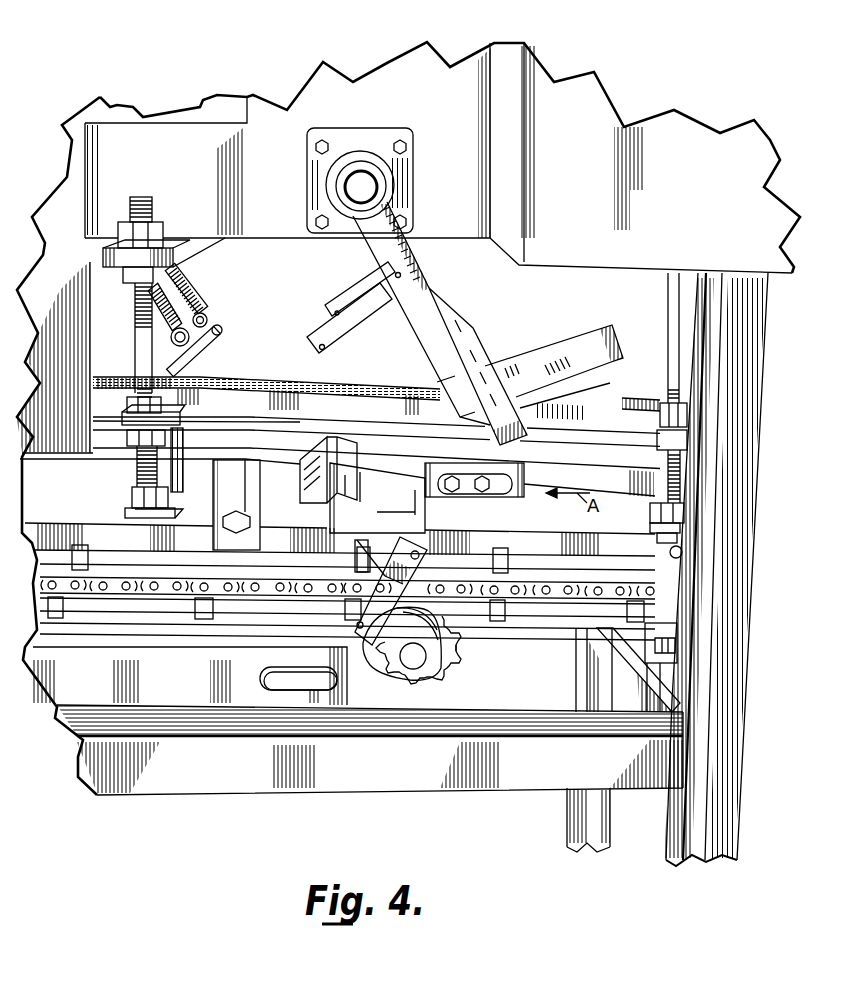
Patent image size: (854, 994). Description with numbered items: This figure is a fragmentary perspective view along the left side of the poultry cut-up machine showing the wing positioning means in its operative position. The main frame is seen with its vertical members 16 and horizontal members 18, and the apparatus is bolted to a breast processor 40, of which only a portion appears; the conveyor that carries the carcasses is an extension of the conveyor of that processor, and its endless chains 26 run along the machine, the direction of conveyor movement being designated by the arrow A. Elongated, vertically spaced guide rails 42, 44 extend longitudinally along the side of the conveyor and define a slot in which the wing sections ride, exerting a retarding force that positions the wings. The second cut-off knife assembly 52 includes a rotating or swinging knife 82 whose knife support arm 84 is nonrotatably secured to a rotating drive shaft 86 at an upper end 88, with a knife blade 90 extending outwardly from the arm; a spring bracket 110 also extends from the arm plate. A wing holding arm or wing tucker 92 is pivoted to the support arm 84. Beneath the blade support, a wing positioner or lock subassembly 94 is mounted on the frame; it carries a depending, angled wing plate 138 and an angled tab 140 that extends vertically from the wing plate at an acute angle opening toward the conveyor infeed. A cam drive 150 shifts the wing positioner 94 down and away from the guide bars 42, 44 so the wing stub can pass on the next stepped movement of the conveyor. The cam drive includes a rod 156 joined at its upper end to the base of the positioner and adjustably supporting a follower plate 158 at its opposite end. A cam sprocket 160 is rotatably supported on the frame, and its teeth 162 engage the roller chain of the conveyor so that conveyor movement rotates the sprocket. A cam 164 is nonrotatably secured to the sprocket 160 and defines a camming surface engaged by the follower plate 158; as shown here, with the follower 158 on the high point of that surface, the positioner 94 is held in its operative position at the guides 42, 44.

The vertical members 16 is at (727, 718).
The horizontal members 18 is at (97, 533).
The endless chains 26 is at (530, 587).
The breast processor 40 is at (110, 204).
The guide rail 42 is at (613, 392).
The guide rail 44 is at (630, 462).
The second cut-off knife assembly 52 is at (456, 94).
The rotating or swinging knife 82 is at (440, 184).
The knife support arm 84 is at (402, 257).
The rotating drive shaft 86 is at (352, 190).
The upper end 88 is at (358, 167).
The knife blade 90 is at (567, 350).
The wing holding arm or wing tucker 92 is at (473, 328).
The wing positioner or lock subassembly 94 is at (309, 432).
The spring bracket 110 is at (322, 337).
The wing plate 138 is at (396, 501).
The angled tab 140 is at (340, 465).
The cam drive 150 is at (408, 696).
The rod 156 is at (403, 540).
The follower plate 158 is at (357, 624).
The cam sprocket 160 is at (456, 663).
The teeth 162 is at (466, 640).
The cam 164 is at (393, 648).